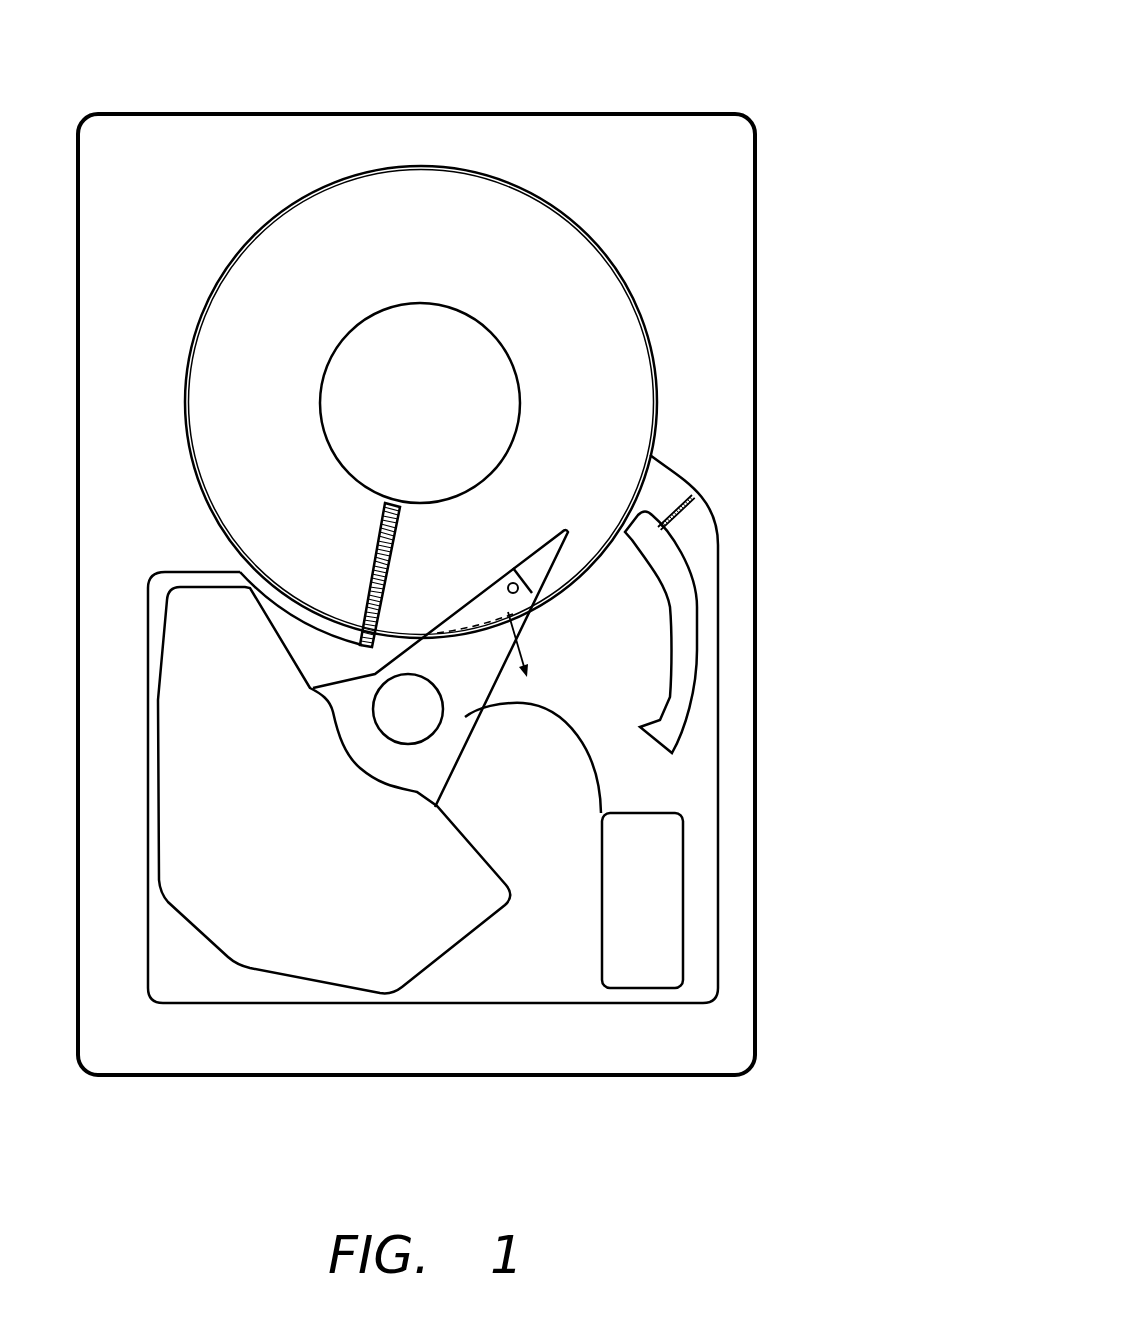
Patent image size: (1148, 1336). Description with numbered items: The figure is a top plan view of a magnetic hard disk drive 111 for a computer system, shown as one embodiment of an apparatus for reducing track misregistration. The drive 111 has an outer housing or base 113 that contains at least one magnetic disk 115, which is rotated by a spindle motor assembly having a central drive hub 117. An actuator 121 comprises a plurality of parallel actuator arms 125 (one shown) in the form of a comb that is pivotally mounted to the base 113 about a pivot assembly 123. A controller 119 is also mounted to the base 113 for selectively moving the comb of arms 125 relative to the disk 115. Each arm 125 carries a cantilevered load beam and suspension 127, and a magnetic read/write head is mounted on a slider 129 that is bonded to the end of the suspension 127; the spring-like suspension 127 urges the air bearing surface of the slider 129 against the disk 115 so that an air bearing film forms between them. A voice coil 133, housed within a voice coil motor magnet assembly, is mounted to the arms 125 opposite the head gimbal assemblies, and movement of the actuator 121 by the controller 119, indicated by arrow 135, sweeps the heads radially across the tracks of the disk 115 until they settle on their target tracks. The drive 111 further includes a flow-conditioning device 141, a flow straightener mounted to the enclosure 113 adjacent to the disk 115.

The disk drive 111 is at (846, 46).
The base 113 is at (757, 222).
The magnetic disk 115 is at (568, 270).
The central drive hub 117 is at (515, 365).
The controller 119 is at (685, 920).
The actuator 121 is at (530, 633).
The pivot assembly 123 is at (438, 737).
The actuator arm 125 is at (498, 600).
The suspension 127 is at (545, 548).
The slider 129 is at (565, 520).
The voice coil 133 is at (472, 847).
The arrow 135 is at (426, 595).
The flow-conditioning device 141 is at (375, 560).